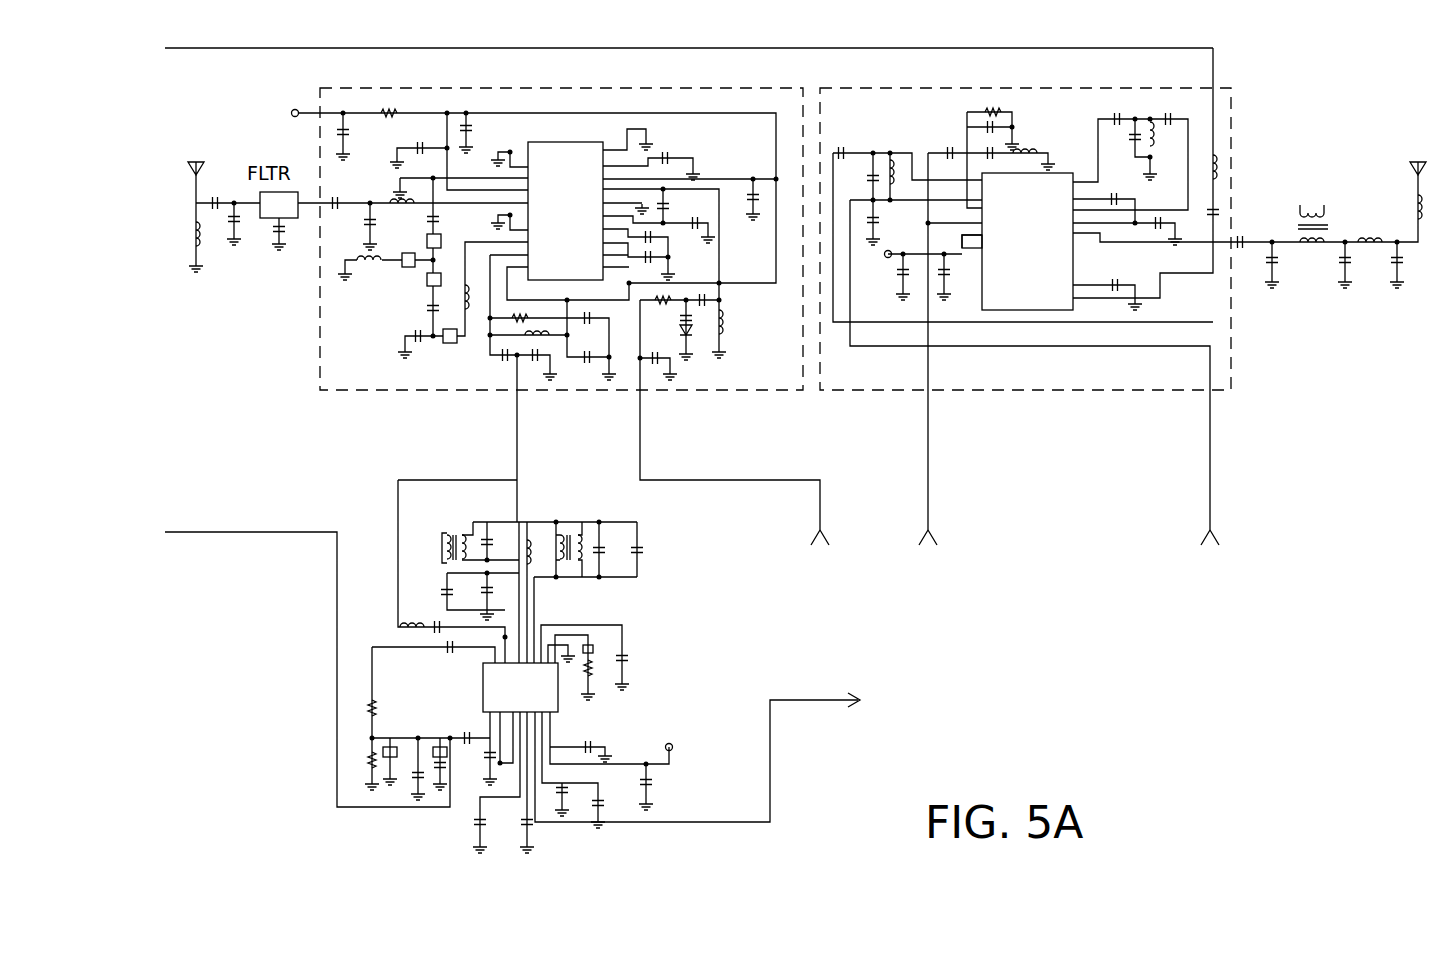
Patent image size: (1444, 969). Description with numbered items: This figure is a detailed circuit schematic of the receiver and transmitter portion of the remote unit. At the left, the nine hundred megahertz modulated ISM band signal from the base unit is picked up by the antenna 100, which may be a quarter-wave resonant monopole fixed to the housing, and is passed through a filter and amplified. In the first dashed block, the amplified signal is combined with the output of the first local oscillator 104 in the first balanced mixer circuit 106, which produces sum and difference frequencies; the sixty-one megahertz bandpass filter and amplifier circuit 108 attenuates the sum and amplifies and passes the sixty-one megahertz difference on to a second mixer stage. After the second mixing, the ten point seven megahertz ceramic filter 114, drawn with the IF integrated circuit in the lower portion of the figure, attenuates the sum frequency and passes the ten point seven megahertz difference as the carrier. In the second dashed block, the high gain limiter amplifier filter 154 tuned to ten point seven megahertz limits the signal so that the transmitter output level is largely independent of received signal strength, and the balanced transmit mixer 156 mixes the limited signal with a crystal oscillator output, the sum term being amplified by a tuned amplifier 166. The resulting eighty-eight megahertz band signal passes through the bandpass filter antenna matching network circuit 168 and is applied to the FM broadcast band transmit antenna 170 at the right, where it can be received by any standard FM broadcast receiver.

The antenna 100 is at (201, 262).
The first local oscillator 104 is at (312, 90).
The first balanced mixer circuit 106 is at (497, 302).
The 61 MHz bandpass filter and amplifier circuit 108 is at (497, 302).
The 10.7 MHz ceramic filter 114 is at (380, 668).
The high gain limiter amplifier filter 154 is at (1112, 296).
The balanced transmit mixer 156 is at (1112, 296).
The transmitter amplifier 166 is at (1112, 296).
The bandpass filter antenna matching network circuit 168 is at (1248, 358).
The FM broadcast band transmit antenna 170 is at (1413, 182).